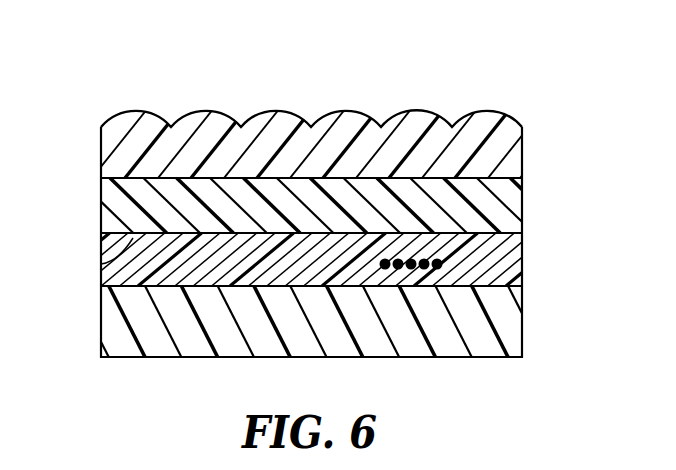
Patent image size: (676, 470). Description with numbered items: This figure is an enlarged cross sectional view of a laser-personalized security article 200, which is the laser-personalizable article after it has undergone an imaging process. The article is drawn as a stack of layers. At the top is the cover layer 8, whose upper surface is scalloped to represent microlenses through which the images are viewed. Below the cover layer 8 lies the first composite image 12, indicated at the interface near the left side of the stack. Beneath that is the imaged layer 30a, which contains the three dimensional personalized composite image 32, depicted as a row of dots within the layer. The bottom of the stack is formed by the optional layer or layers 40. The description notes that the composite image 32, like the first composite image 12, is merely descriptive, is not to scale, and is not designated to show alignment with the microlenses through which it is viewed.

The laser-personalized security article 200 is at (149, 66).
The cover layer 8 is at (540, 112).
The first composite image 12 is at (101, 263).
The imaged layer 30a is at (498, 259).
The three dimensional personalized composite image 32 is at (417, 270).
The optional layer or layers 40 is at (498, 316).